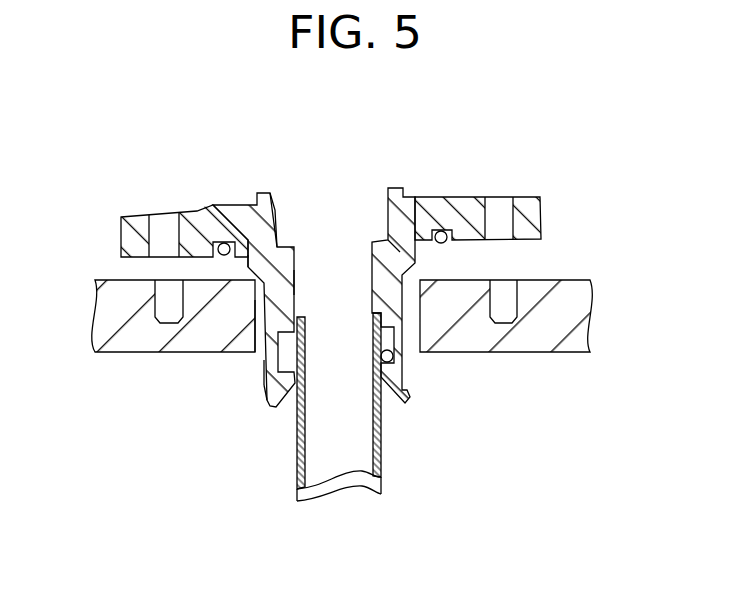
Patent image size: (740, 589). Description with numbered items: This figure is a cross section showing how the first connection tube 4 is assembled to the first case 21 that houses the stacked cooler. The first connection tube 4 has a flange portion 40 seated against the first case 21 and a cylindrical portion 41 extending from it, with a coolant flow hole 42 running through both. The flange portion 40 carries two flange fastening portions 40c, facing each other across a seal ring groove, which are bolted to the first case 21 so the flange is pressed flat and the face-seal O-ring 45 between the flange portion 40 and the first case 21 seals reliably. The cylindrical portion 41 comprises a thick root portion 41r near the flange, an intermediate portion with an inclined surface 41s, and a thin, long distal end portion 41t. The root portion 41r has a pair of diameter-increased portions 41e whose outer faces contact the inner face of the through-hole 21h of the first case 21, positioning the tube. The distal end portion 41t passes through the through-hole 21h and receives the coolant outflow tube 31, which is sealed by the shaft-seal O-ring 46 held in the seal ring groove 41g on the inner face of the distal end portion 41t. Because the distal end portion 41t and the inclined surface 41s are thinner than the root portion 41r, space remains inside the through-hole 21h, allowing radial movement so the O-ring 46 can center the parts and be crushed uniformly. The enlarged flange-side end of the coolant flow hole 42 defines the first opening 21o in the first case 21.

The first connection tube 4 is at (336, 308).
The first case 21 is at (380, 286).
The through-hole 21h is at (276, 346).
The first opening 21o is at (275, 222).
The coolant outflow tube 31 is at (335, 497).
The flange portion 40 is at (336, 197).
The flange fastening portion 40c is at (120, 218).
The cylindrical portion 41 is at (338, 328).
The diameter-increased portion 41e is at (243, 265).
The seal ring groove 41g is at (267, 398).
The root portion 41r is at (391, 257).
The inclined surface 41s is at (392, 255).
The distal end portion 41t is at (262, 372).
The coolant flow hole 42 is at (295, 282).
The O-ring 45 is at (450, 243).
The O-ring 46 is at (392, 357).